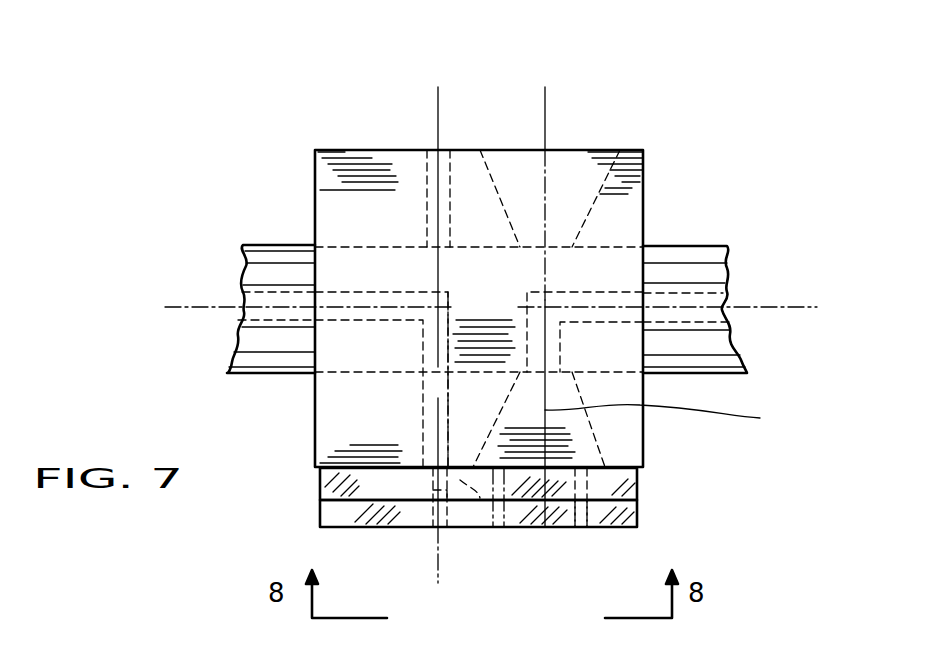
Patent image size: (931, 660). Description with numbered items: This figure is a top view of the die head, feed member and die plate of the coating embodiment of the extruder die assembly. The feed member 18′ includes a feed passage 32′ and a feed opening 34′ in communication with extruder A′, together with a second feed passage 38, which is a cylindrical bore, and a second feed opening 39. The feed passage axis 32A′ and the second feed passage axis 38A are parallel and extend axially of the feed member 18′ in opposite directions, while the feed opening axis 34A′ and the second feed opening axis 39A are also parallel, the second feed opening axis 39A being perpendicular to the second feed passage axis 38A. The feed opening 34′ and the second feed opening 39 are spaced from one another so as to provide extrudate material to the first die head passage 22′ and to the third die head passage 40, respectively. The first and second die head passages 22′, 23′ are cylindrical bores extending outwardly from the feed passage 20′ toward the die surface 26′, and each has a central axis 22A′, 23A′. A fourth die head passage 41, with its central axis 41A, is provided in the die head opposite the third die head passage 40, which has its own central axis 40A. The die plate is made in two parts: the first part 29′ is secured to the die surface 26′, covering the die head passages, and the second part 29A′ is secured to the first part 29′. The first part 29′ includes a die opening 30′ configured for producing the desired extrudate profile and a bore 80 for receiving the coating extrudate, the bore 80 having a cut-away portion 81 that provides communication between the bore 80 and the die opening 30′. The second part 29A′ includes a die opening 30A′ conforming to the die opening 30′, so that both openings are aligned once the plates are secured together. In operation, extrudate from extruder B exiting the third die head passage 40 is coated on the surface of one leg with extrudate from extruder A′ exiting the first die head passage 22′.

The feed member 18′ is at (695, 247).
The feed passage 20′ is at (618, 247).
The first die head passage 22′ is at (425, 430).
The central axis of first die head passage 22A′ is at (438, 405).
The second die head passage 23′ is at (428, 195).
The central axis of second die head passage 23A′ is at (438, 130).
The die surface 26′ is at (643, 152).
The first part of die plate 29′ is at (640, 478).
The second part of die plate 29A′ is at (640, 520).
The die opening 30′ is at (590, 520).
The die opening of second part 30A′ is at (580, 520).
The feed passage 32′ is at (243, 290).
The feed passage axis 32A′ is at (215, 307).
The feed opening 34′ is at (425, 343).
The feed opening axis 34A′ is at (438, 285).
The second feed passage 38 is at (728, 300).
The second feed passage axis 38A is at (757, 307).
The second feed opening 39 is at (560, 362).
The second feed opening axis 39A is at (547, 285).
The third die head passage 40 is at (590, 430).
The central axis of third die head passage 40A is at (678, 417).
The fourth die head passage 41 is at (612, 190).
The central axis of fourth die head passage 41A is at (545, 130).
The bore 80 is at (443, 500).
The cut-away portion 81 is at (475, 500).